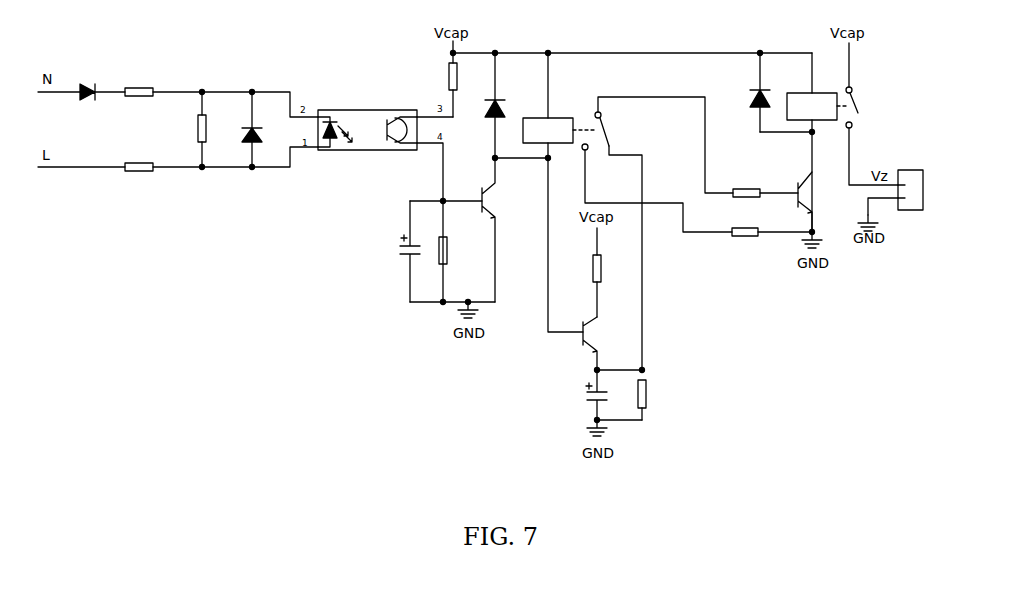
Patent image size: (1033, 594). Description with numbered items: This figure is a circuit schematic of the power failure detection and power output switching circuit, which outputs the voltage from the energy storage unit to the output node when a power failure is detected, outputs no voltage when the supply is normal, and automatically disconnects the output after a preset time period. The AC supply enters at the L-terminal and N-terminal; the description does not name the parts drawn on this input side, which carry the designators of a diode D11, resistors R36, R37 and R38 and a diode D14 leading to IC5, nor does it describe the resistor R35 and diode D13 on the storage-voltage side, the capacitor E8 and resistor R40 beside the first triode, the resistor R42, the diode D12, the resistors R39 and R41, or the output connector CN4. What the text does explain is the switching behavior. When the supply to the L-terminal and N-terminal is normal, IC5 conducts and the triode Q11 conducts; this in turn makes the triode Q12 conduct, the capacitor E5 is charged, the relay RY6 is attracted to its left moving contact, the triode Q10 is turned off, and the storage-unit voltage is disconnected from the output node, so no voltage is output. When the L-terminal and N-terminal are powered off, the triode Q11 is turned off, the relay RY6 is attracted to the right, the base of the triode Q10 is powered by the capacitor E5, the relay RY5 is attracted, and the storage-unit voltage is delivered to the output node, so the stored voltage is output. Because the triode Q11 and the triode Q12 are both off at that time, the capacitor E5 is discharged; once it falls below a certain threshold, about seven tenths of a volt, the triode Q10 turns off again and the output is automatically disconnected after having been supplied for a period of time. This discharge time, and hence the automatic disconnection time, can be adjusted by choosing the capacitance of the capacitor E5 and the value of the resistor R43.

The diode D11 is at (91, 81).
The resistor R36 is at (138, 82).
The resistor R37 is at (217, 129).
The resistor R38 is at (138, 158).
The diode D14 is at (268, 129).
The element IC5 is at (367, 118).
The resistor R35 is at (467, 85).
The diode D13 is at (509, 105).
The relay RY6 is at (597, 129).
The triode Q11 is at (504, 230).
The electrolytic capacitor E8 is at (417, 251).
The resistor R40 is at (458, 250).
The resistor R42 is at (612, 286).
The triode Q12 is at (606, 343).
The capacitor E5 is at (603, 395).
The resistor R43 is at (657, 400).
The diode D12 is at (745, 92).
The relay RY5 is at (839, 107).
The resistor R39 is at (765, 184).
The resistor R41 is at (772, 244).
The triode Q10 is at (822, 202).
The connector CN4 is at (911, 181).